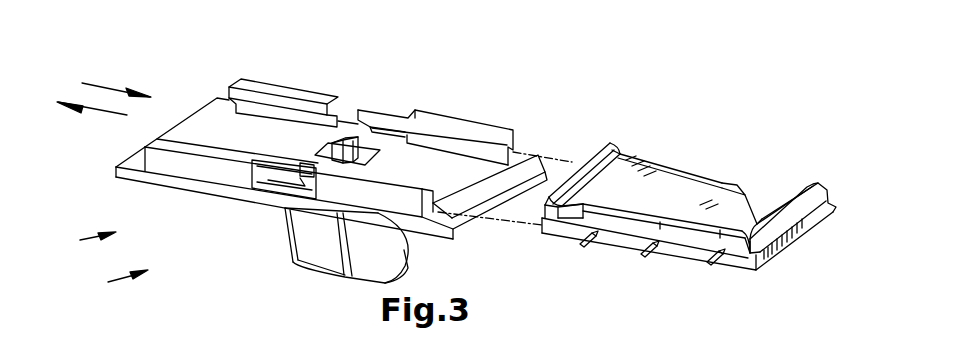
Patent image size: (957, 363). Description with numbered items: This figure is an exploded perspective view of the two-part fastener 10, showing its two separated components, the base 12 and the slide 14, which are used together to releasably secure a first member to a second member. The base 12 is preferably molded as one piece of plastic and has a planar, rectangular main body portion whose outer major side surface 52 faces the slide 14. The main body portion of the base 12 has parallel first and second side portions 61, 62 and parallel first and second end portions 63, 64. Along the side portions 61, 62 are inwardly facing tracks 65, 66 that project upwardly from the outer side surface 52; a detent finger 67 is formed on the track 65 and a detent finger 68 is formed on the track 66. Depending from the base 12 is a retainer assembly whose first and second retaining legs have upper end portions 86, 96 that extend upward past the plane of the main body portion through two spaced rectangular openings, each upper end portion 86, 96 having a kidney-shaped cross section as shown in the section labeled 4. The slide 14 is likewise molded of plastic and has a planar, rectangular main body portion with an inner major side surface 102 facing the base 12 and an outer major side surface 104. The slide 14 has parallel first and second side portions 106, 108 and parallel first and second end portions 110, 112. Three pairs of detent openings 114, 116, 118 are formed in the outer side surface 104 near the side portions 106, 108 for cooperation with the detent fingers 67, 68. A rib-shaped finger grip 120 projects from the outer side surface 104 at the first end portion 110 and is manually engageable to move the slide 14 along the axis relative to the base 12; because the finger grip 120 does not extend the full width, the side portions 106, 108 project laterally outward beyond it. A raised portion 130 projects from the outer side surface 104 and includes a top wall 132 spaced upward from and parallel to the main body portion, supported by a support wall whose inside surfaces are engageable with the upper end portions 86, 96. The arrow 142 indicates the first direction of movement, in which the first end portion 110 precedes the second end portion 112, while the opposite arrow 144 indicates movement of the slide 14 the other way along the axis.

The section line 4- 4 is at (266, 297).
The two-part fastener 10 is at (85, 235).
The base 12 is at (117, 280).
The slide 14 is at (630, 305).
The outer major side surface 52 is at (443, 170).
The first side portion 61 is at (277, 88).
The second side portion 62 is at (234, 201).
The first end portion 63 is at (458, 240).
The second end portion 64 is at (127, 157).
The track 65 is at (313, 95).
The track 66 is at (210, 162).
The detent finger 67 is at (377, 107).
The detent finger 68 is at (288, 180).
The upper end portion 86 is at (320, 174).
The upper end portion 96 is at (333, 141).
The inner major side surface 102 is at (810, 183).
The outer major side surface 104 is at (680, 248).
The first side portion 106 is at (610, 243).
The second side portion 108 is at (713, 180).
The first end portion 110 is at (620, 148).
The second end portion 112 is at (800, 220).
The detent openings 114 is at (720, 257).
The detent openings 116 is at (660, 250).
The detent openings 118 is at (590, 243).
The finger grip 120 is at (595, 160).
The raised portion 130 is at (680, 197).
The top wall 132 is at (660, 187).
The first direction of movement 142 is at (100, 115).
The insertion direction arrow 144 is at (108, 88).